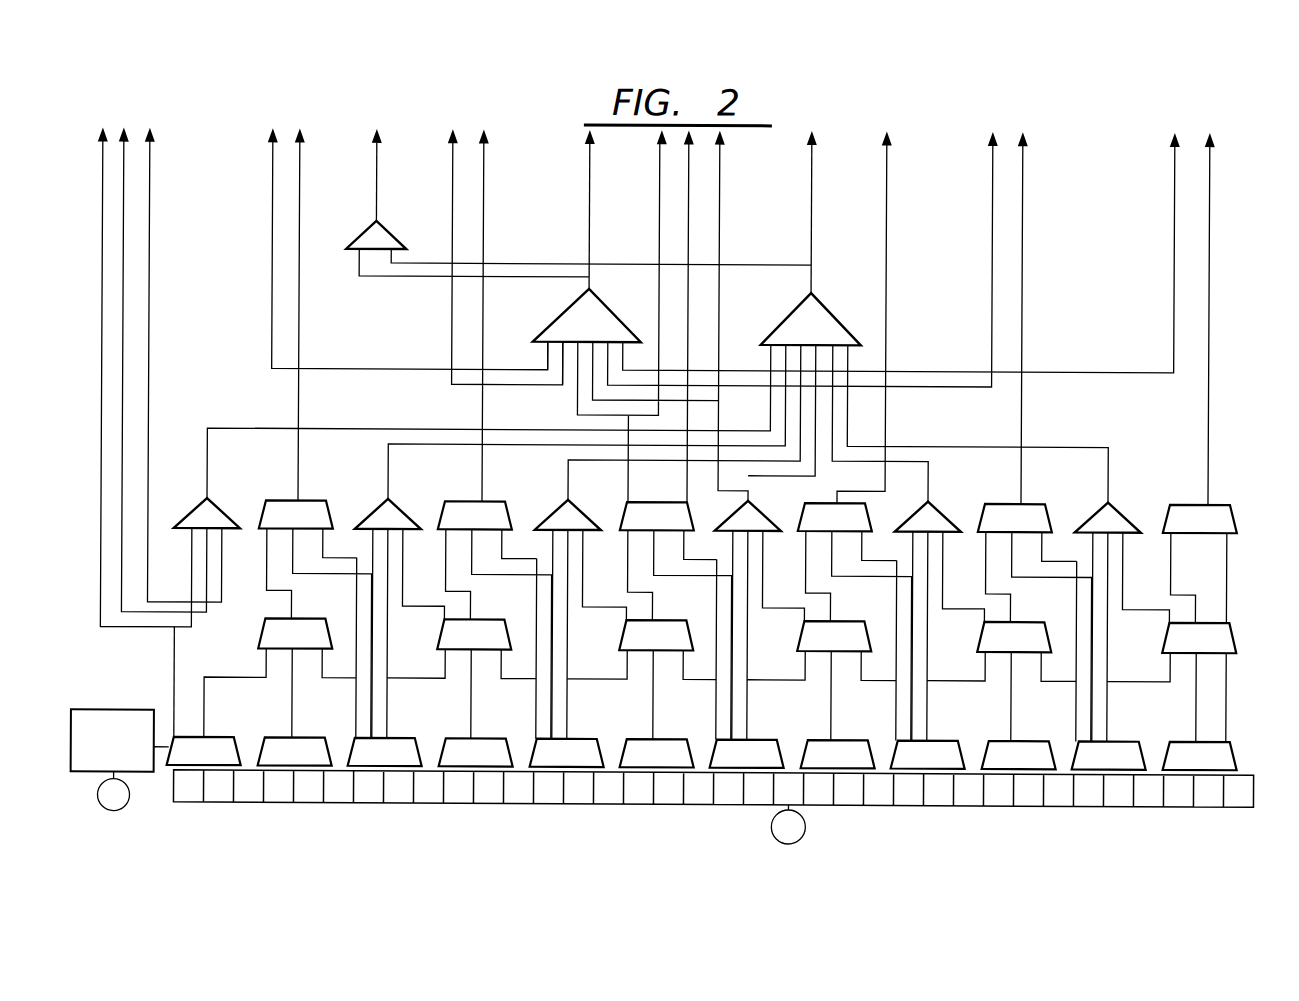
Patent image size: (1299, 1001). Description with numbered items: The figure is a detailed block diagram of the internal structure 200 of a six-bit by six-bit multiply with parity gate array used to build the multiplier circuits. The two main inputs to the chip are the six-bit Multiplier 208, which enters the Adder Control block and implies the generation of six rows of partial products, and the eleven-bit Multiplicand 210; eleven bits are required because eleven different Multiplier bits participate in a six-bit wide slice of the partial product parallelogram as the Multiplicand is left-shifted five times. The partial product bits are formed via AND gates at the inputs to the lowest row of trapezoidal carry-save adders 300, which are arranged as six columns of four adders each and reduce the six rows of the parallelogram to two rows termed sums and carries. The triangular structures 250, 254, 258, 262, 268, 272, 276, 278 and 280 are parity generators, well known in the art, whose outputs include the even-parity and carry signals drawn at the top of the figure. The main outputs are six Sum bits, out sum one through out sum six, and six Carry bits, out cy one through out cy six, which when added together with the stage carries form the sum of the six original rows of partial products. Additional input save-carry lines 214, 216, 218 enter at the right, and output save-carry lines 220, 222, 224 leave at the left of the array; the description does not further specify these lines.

The internal structure 200 is at (1125, 331).
The Multiplier 208 is at (120, 811).
The Multiplicand 210 is at (796, 840).
The input save carry 1 line 214 is at (1230, 668).
The input save carry 2 line 216 is at (1198, 572).
The input save carry 3 line 218 is at (1238, 532).
The output save carry 3 line 220 is at (147, 497).
The output save carry 2 line 222 is at (122, 465).
The output save carry 1 line 224 is at (101, 448).
The parity generator 250 is at (248, 490).
The parity generator 254 is at (428, 490).
The parity generator 258 is at (608, 490).
The parity generator 262 is at (797, 506).
The parity generator 268 is at (966, 496).
The parity generator 272 is at (1150, 496).
The parity generator 276 is at (648, 308).
The parity generator 278 is at (871, 310).
The parity generator 280 is at (393, 238).
The carry-save adder 300 is at (1233, 740).